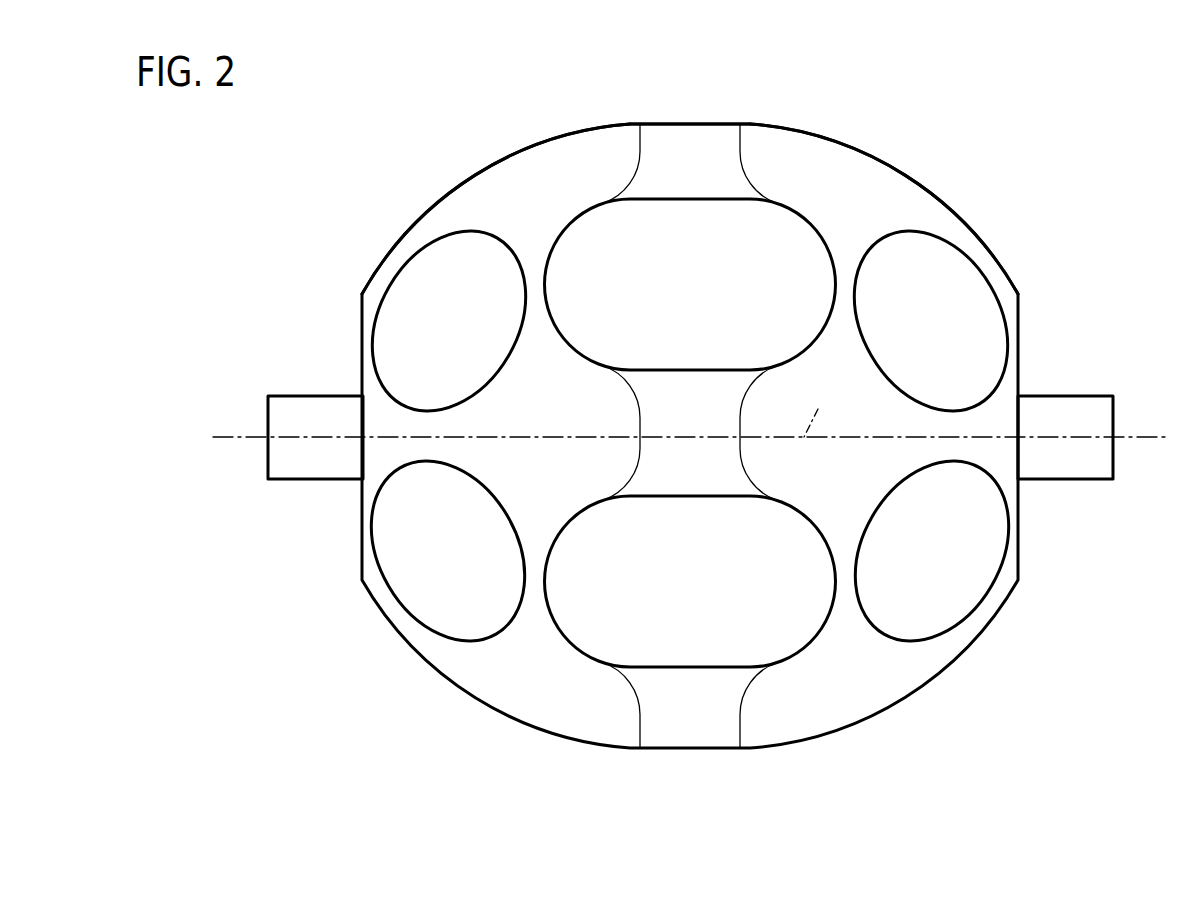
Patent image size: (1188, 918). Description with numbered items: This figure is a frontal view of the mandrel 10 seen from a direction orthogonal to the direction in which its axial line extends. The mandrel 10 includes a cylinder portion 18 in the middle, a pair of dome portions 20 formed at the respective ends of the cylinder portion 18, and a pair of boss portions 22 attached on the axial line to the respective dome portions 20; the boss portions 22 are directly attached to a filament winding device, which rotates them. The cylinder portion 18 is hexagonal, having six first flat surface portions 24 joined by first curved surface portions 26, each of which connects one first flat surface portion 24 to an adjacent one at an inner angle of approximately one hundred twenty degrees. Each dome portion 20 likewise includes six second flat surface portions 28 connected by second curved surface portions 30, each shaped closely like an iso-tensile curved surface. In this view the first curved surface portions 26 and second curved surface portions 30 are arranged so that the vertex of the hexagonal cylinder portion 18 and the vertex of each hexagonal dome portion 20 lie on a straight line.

The mandrel 10 is at (266, 163).
The cylinder portion 18 is at (697, 109).
The dome portion 20 is at (412, 189).
The boss portion 22 is at (307, 467).
The first flat surface portion 24 is at (593, 323).
The first curved surface portion 26 is at (690, 473).
The second flat surface portion 28 is at (428, 290).
The second curved surface portion 30 is at (522, 158).